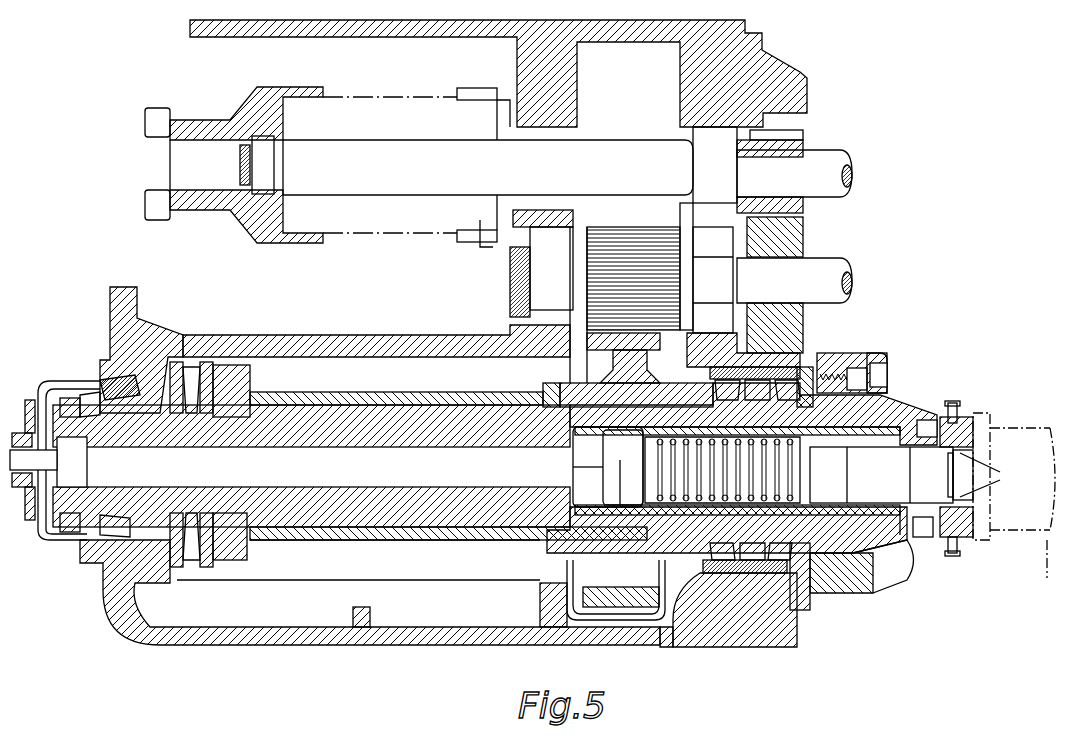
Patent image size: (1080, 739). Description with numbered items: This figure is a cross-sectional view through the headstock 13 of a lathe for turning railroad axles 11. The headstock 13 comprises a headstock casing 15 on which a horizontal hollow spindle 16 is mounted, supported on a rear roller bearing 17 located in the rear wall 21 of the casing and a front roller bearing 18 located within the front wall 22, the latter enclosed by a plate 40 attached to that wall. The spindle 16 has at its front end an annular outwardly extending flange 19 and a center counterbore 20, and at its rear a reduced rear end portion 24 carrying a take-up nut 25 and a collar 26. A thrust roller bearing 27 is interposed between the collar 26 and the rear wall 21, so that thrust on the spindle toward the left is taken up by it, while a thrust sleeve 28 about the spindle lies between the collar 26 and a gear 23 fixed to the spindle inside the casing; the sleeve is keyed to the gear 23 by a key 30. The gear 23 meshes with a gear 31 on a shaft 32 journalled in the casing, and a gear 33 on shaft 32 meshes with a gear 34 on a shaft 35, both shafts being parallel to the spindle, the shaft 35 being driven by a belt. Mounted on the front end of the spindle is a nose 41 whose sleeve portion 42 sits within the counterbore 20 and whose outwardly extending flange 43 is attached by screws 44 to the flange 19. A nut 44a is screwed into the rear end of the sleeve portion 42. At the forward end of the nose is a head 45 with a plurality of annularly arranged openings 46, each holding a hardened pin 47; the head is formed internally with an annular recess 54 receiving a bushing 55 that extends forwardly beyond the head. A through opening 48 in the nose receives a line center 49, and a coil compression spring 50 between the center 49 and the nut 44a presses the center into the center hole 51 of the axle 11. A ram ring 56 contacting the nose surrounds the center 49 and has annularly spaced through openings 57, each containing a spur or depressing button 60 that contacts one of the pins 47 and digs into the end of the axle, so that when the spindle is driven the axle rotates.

The railroad axle 11 is at (1045, 510).
The headstock 13 is at (189, 660).
The headstock casing 15 is at (323, 645).
The spindle 16 is at (344, 528).
The rear roller bearing 17 is at (118, 378).
The front roller bearing 18 is at (762, 590).
The flange 19 is at (842, 362).
The center counterbore 20 is at (822, 590).
The rear wall 21 is at (115, 303).
The front wall 22 is at (783, 612).
The gear 23 is at (640, 618).
The reduced rear end portion 24 is at (218, 540).
The take-up nut 25 is at (68, 398).
The collar 26 is at (240, 380).
The thrust roller bearing 27 is at (191, 372).
The thrust sleeve 28 is at (398, 398).
The key 30 is at (552, 392).
The gear 31 is at (632, 240).
The shaft 32 is at (832, 272).
The gear 33 is at (800, 250).
The gear 34 is at (806, 146).
The shaft 35 is at (832, 166).
The plate 40 is at (808, 366).
The nose 41 is at (909, 394).
The sleeve portion 42 is at (620, 508).
The flange 43 is at (878, 356).
The screws 44 is at (880, 375).
The nut 44a is at (600, 462).
The head 45 is at (915, 548).
The openings 46 is at (930, 422).
The hardened pin 47 is at (956, 410).
The through opening 48 is at (872, 505).
The line center 49 is at (958, 482).
The coil compression spring 50 is at (705, 548).
The center hole 51 is at (985, 468).
The annular recess 54 is at (903, 540).
The bushing 55 is at (966, 425).
The ram ring 56 is at (958, 556).
The through openings 57 is at (976, 543).
The spur 60 is at (980, 430).